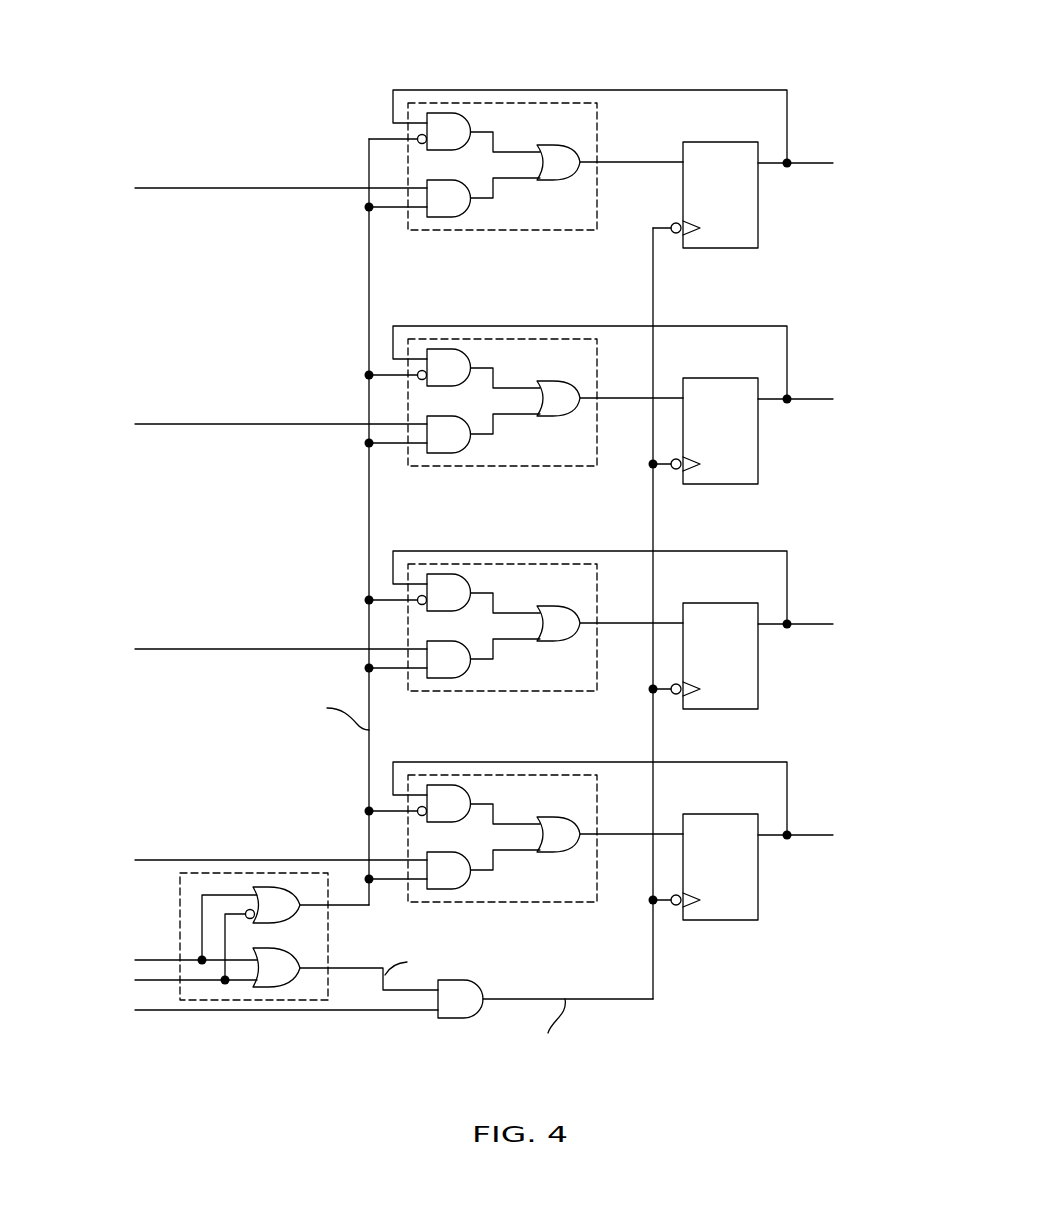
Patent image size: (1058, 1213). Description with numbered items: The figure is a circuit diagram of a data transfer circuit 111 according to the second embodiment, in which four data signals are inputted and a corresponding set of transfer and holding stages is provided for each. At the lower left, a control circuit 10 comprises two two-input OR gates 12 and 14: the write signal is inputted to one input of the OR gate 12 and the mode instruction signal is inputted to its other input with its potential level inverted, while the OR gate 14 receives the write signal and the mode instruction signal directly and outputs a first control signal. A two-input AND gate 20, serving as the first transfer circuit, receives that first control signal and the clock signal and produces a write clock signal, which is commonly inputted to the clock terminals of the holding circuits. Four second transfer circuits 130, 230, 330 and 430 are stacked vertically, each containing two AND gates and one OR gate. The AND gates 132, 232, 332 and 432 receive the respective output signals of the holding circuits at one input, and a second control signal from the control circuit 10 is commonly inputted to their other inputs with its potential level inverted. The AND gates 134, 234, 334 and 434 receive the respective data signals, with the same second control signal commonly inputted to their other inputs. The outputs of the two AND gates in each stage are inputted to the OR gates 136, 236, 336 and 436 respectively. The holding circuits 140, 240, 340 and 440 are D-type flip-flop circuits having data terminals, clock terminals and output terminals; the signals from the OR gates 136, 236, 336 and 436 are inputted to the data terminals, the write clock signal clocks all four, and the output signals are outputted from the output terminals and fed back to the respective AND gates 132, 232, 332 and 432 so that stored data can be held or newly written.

The data transfer circuit 111 is at (802, 65).
The control circuit 10 is at (328, 945).
The OR gate 12 is at (268, 887).
The OR gate 14 is at (265, 987).
The AND gate 20 is at (458, 980).
The second transfer circuit 130 is at (597, 814).
The AND gate 132 is at (467, 794).
The AND gate 134 is at (467, 879).
The OR gate 136 is at (557, 852).
The holding circuit 140 is at (715, 920).
The second transfer circuit 230 is at (597, 603).
The AND gate 232 is at (467, 583).
The AND gate 234 is at (467, 668).
The OR gate 236 is at (557, 641).
The holding circuit 240 is at (715, 709).
The second transfer circuit 330 is at (597, 378).
The AND gate 332 is at (467, 358).
The AND gate 334 is at (467, 443).
The OR gate 336 is at (557, 416).
The holding circuit 340 is at (715, 484).
The second transfer circuit 430 is at (597, 142).
The AND gate 432 is at (467, 122).
The AND gate 434 is at (467, 207).
The OR gate 436 is at (557, 180).
The holding circuit 440 is at (715, 248).